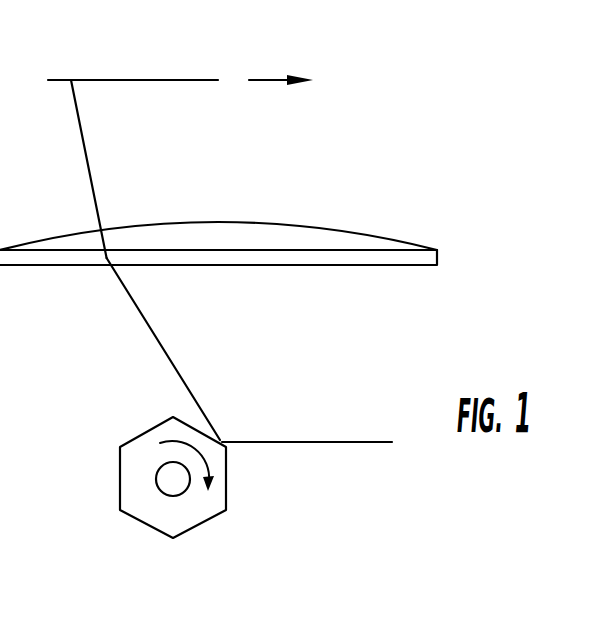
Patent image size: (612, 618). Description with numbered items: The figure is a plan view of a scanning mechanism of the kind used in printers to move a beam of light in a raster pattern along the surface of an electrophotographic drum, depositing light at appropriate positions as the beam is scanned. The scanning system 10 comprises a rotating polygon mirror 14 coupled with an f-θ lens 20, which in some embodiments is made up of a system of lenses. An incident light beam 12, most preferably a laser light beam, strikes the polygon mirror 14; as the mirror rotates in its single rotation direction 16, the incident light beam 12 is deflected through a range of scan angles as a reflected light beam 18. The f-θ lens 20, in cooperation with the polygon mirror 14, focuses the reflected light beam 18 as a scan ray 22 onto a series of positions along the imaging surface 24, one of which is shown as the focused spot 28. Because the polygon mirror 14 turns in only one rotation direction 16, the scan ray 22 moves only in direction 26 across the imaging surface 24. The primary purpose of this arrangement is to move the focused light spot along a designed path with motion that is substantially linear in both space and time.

The scanning system 10 is at (483, 146).
The incident light beam 12 is at (322, 445).
The polygon mirror 14 is at (200, 527).
The rotation direction 16 is at (212, 463).
The reflected light beam 18 is at (188, 388).
The f-θ lens 20 is at (297, 266).
The scan ray 22 is at (95, 185).
The imaging surface 24 is at (188, 82).
The direction 26 is at (270, 80).
The focused spot 28 is at (72, 82).